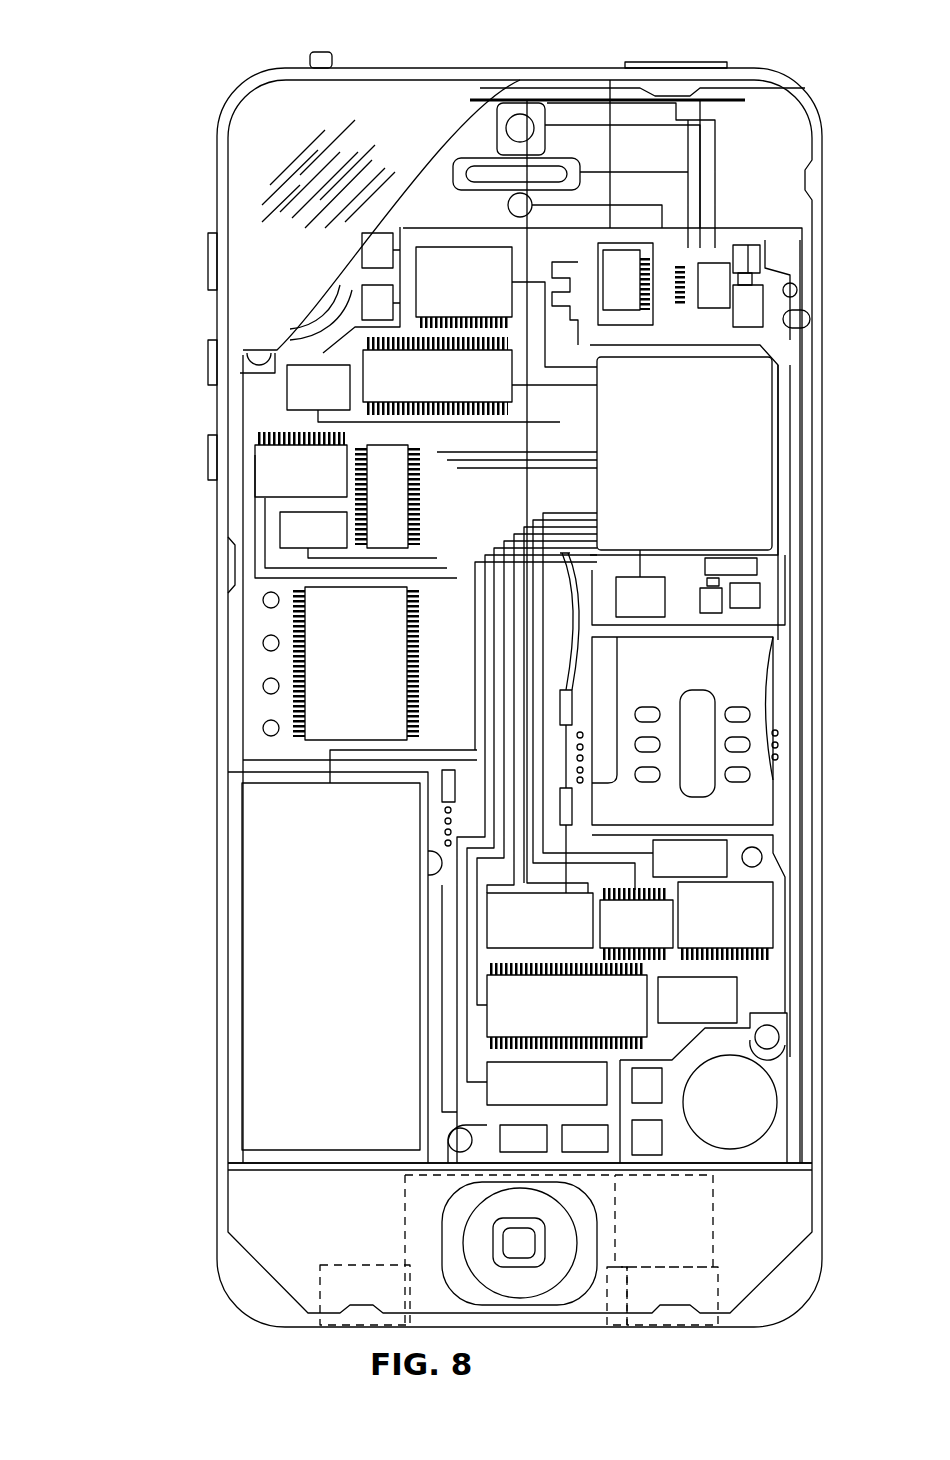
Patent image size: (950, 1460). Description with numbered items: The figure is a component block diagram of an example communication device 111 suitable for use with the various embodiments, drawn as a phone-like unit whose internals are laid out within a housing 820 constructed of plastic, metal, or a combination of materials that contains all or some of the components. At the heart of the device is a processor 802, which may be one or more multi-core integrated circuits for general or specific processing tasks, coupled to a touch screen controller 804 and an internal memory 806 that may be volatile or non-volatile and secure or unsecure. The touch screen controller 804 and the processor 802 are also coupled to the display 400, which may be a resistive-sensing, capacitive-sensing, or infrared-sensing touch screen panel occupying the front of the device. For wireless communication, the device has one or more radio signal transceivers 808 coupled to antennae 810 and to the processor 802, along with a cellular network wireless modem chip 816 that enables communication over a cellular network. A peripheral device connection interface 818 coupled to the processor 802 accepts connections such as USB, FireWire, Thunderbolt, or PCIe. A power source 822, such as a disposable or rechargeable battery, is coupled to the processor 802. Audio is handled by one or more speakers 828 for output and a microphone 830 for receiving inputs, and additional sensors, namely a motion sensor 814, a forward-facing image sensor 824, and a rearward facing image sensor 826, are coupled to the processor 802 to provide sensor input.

The communication device 111 is at (183, 84).
The display 400 is at (246, 184).
The processor 802 is at (684, 450).
The touch screen controller 804 is at (506, 307).
The internal memory 806 is at (480, 376).
The radio signal transceivers 808 is at (730, 248).
The antennae 810 is at (725, 100).
The motion sensor 814 is at (478, 158).
The cellular network wireless modem chip 816 is at (567, 1006).
The peripheral device connection interface 818 is at (547, 1083).
The housing 820 is at (228, 1185).
The power source 822 is at (331, 966).
The forward-facing image sensor 824 is at (522, 114).
The rearward facing image sensor 826 is at (528, 198).
The speakers 828 is at (310, 1283).
The microphone 830 is at (617, 1327).